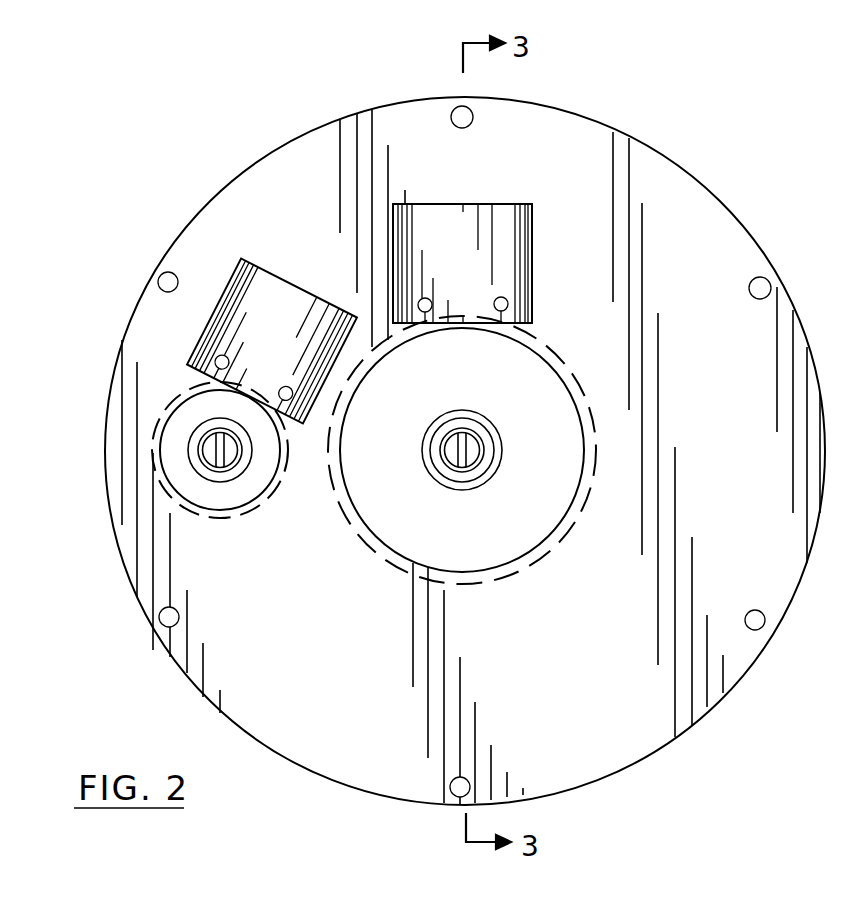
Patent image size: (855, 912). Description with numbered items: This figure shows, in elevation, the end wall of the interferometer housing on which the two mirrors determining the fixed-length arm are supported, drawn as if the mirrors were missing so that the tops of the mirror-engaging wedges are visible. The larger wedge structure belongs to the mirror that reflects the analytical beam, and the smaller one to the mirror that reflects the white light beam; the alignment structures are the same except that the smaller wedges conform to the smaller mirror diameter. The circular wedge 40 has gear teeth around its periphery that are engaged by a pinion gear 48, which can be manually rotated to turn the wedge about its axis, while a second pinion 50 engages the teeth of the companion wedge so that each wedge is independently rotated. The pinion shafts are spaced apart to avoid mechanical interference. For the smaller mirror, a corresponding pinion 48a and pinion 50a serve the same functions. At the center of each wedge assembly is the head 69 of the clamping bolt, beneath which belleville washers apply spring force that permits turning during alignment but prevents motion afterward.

The wedge 40 is at (370, 497).
The pinion gear 48 is at (520, 330).
The second guide block 48a is at (283, 413).
The pinion 50 is at (413, 327).
The small roller 50a is at (213, 381).
The head of bolt 69 is at (480, 462).